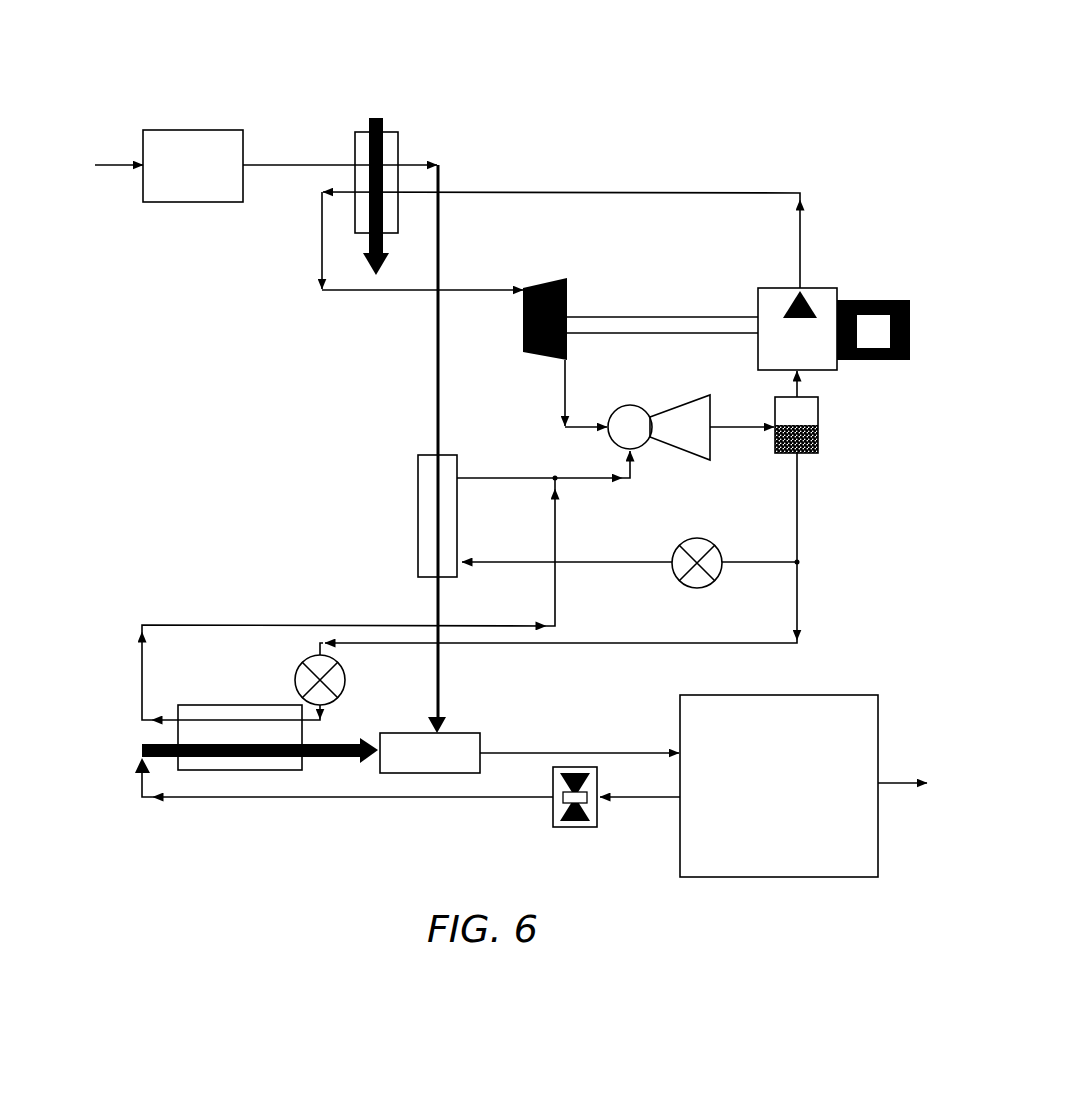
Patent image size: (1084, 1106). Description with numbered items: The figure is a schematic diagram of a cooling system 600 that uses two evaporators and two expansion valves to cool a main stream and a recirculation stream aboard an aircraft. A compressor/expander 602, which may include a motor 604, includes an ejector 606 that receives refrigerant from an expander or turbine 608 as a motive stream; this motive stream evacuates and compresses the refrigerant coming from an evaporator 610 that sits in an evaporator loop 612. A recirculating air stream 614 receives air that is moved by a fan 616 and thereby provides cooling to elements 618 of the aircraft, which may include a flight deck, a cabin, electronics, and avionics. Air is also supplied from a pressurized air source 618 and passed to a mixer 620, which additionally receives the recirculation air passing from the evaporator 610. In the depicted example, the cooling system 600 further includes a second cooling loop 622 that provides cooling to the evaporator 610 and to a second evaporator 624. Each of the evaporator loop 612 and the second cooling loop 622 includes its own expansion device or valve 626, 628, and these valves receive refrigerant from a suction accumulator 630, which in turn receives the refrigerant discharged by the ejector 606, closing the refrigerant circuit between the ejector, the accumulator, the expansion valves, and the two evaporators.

The cooling system 600 is at (165, 68).
The compressor/expander 602 is at (830, 265).
The motor 604 is at (865, 300).
The ejector 606 is at (625, 393).
The expander or turbine 608 is at (545, 280).
The evaporator 610 is at (213, 705).
The evaporator loop 612 is at (107, 732).
The recirculating air stream 614 is at (373, 800).
The fan 616 is at (573, 827).
The elements of an aircraft / pressurized air source 618 is at (165, 130).
The mixer 620 is at (460, 733).
The second cooling loop 622 is at (367, 470).
The evaporator 624 is at (460, 465).
The expansion device or valve 626 is at (300, 666).
The expansion device or valve 628 is at (697, 540).
The suction accumulator 630 is at (820, 420).